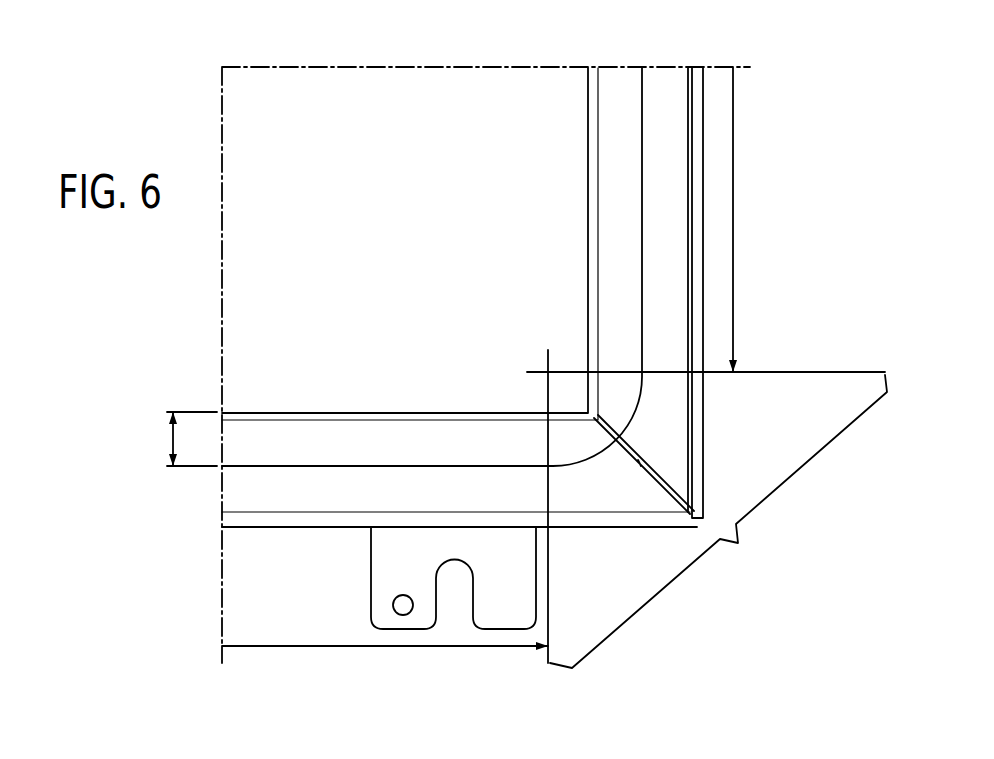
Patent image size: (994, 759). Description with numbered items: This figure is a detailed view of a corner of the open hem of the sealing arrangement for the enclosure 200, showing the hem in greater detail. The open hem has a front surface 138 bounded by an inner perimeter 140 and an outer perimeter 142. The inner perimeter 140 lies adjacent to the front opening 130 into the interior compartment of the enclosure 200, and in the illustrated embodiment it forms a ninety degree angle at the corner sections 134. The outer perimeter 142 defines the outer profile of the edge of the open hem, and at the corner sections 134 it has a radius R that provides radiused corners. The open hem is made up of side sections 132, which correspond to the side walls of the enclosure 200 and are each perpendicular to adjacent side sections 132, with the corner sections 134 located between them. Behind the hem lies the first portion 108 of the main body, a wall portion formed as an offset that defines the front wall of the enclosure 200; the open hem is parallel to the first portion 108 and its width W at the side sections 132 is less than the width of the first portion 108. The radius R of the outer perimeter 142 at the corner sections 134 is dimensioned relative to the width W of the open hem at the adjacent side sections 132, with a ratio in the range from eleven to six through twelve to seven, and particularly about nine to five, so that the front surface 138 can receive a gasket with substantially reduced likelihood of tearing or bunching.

The enclosure 200 is at (256, 126).
The front opening 130 is at (248, 359).
The inner perimeter 140 is at (407, 412).
The front surface 138 is at (610, 75).
The outer perimeter 142 is at (387, 466).
The first portion 108 is at (662, 75).
The corner sections 134 is at (718, 521).
The side sections 132 is at (733, 212).
The width W is at (177, 439).
The radius R is at (635, 420).